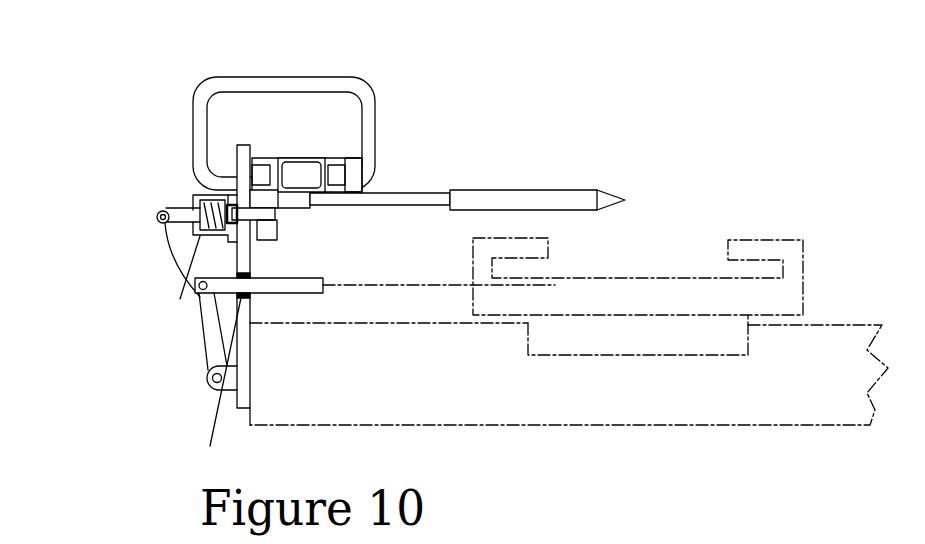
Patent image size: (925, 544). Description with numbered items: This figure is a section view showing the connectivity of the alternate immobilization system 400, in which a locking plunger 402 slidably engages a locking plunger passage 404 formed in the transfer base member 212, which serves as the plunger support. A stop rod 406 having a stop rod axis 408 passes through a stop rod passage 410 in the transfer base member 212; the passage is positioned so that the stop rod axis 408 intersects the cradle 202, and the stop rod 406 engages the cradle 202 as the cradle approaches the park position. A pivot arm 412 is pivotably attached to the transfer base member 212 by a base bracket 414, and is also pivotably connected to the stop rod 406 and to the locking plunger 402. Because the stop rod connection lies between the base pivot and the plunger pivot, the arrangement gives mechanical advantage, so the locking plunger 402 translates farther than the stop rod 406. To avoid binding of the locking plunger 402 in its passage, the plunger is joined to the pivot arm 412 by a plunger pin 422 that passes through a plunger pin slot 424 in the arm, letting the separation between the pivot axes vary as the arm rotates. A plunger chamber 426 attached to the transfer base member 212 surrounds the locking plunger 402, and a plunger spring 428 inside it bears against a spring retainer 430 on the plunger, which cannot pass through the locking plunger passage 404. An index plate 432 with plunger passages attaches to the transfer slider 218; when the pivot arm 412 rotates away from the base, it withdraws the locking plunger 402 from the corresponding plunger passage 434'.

The immobilization system 400 is at (153, 97).
The transfer slider 218 is at (278, 160).
The locking plunger passage 404 is at (435, 183).
The spring retainer 430 is at (161, 187).
The plunger spring 428 is at (161, 199).
The locking plunger 402 is at (102, 205).
The plunger pin 422 is at (157, 219).
The plunger pin slot 424 is at (145, 260).
The plunger chamber 426 is at (158, 275).
The plunger passage 434' is at (308, 225).
The index plate 432 is at (323, 252).
The stop rod 406 is at (306, 293).
The stop rod axis 408 is at (250, 298).
The pivot arm 412 is at (172, 331).
The stop rod passage 410 is at (178, 389).
The base bracket 414 is at (210, 446).
The cradle 202 is at (760, 239).
The transfer base member 212 is at (286, 306).